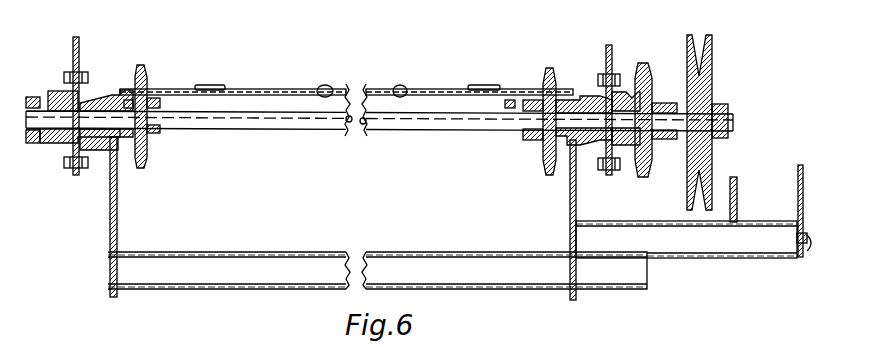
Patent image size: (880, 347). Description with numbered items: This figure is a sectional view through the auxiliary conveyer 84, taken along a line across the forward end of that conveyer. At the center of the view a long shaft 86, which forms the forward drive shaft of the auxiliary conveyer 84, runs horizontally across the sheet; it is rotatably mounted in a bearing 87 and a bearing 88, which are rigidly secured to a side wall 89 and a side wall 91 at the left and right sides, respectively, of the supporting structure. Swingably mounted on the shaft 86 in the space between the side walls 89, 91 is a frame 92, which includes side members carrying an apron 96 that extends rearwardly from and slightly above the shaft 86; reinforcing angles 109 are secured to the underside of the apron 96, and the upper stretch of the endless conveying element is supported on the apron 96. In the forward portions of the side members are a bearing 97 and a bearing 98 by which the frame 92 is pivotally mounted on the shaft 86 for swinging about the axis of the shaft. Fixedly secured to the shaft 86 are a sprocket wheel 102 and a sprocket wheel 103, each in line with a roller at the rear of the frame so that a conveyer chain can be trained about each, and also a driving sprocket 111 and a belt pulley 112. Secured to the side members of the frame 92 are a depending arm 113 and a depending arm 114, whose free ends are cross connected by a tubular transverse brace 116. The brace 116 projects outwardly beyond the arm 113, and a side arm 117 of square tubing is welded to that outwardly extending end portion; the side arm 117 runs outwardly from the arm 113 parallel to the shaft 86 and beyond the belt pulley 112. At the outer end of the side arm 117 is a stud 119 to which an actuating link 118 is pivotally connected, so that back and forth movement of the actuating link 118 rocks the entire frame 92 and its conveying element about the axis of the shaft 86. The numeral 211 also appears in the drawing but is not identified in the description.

The auxiliary conveyer 84 is at (370, 76).
The shaft 86 is at (340, 126).
The bearing 87 is at (632, 92).
The bearing 88 is at (62, 91).
The side wall 89 is at (606, 65).
The side wall 91 is at (80, 46).
The frame 92 is at (278, 88).
The apron 96 is at (159, 90).
The bearing 97 is at (588, 137).
The bearing 98 is at (98, 137).
The sprocket wheel 102 is at (550, 70).
The sprocket wheel 103 is at (143, 66).
The reinforcing angles 109 is at (318, 98).
The driving sprocket 111 is at (642, 178).
The belt pulley 112 is at (692, 67).
The depending arm 113 is at (570, 213).
The depending arm 114 is at (117, 221).
The tubular transverse brace 116 is at (348, 252).
The side arm 117 is at (698, 259).
The actuating link 118 is at (798, 194).
The stud 119 is at (807, 252).
The post 211 is at (737, 180).